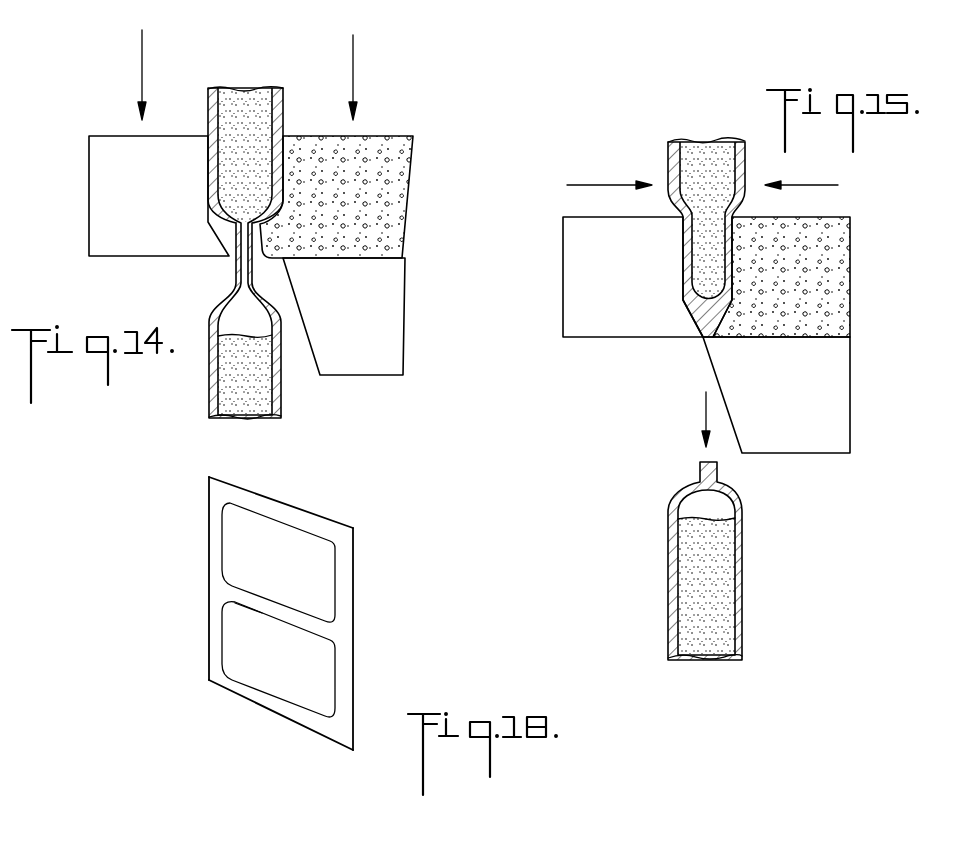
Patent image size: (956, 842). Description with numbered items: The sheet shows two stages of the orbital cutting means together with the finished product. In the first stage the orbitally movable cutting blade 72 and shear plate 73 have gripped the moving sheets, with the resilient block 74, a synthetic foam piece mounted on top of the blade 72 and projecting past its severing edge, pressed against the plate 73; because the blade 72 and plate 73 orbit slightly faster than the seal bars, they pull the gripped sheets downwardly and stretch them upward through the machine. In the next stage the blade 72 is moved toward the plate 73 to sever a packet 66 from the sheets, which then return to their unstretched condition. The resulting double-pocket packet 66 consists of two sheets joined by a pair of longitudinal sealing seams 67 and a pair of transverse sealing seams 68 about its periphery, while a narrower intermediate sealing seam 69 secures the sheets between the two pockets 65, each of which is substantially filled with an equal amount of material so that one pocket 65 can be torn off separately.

In FIG. 14, the cutting blade 72 is at (383, 318).
In FIG. 15, the cutting blade 72 is at (840, 407).
In FIG. 14, the shear plate 73 is at (105, 145).
In FIG. 15, the shear plate 73 is at (570, 252).
In FIG. 14, the resilient block 74 is at (400, 174).
In FIG. 15, the resilient block 74 is at (832, 275).
In FIG. 15, the double-pocket packet 66 is at (668, 518).
In FIG. 16, the double-pocket packet 66 is at (283, 606).
In FIG. 16, the pocket 65 is at (323, 659).
In FIG. 16, the longitudinal sealing seam 67 is at (213, 565).
In FIG. 16, the transverse sealing seam 68 is at (300, 508).
In FIG. 16, the intermediate sealing seam 69 is at (257, 605).